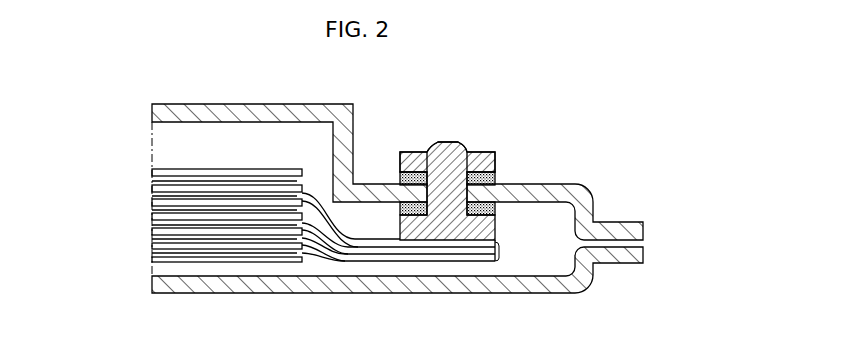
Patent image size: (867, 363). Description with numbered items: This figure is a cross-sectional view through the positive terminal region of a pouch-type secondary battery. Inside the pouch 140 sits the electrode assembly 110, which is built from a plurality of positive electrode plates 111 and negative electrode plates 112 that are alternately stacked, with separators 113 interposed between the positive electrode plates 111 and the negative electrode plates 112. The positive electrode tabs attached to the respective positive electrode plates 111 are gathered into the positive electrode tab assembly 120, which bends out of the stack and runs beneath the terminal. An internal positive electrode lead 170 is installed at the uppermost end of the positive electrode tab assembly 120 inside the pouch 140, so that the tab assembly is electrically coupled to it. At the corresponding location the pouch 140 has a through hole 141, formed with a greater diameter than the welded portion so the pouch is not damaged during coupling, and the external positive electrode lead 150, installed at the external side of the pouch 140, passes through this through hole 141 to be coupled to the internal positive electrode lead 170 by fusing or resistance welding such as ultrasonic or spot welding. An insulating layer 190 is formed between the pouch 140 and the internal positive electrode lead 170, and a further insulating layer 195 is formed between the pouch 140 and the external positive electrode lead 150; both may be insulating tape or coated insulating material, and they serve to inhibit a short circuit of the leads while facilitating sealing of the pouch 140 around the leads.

The electrode assembly 110 is at (140, 239).
The positive electrode plates 111 is at (150, 196).
The negative electrode plates 112 is at (150, 181).
The separators 113 is at (152, 190).
The positive electrode tab assembly 120 is at (497, 249).
The pouch 140 is at (302, 104).
The through hole 141 is at (484, 166).
The external positive electrode lead 150 is at (450, 148).
The internal positive electrode lead 170 is at (440, 228).
The insulating layer 190 is at (404, 218).
The insulating layer 195 is at (411, 166).